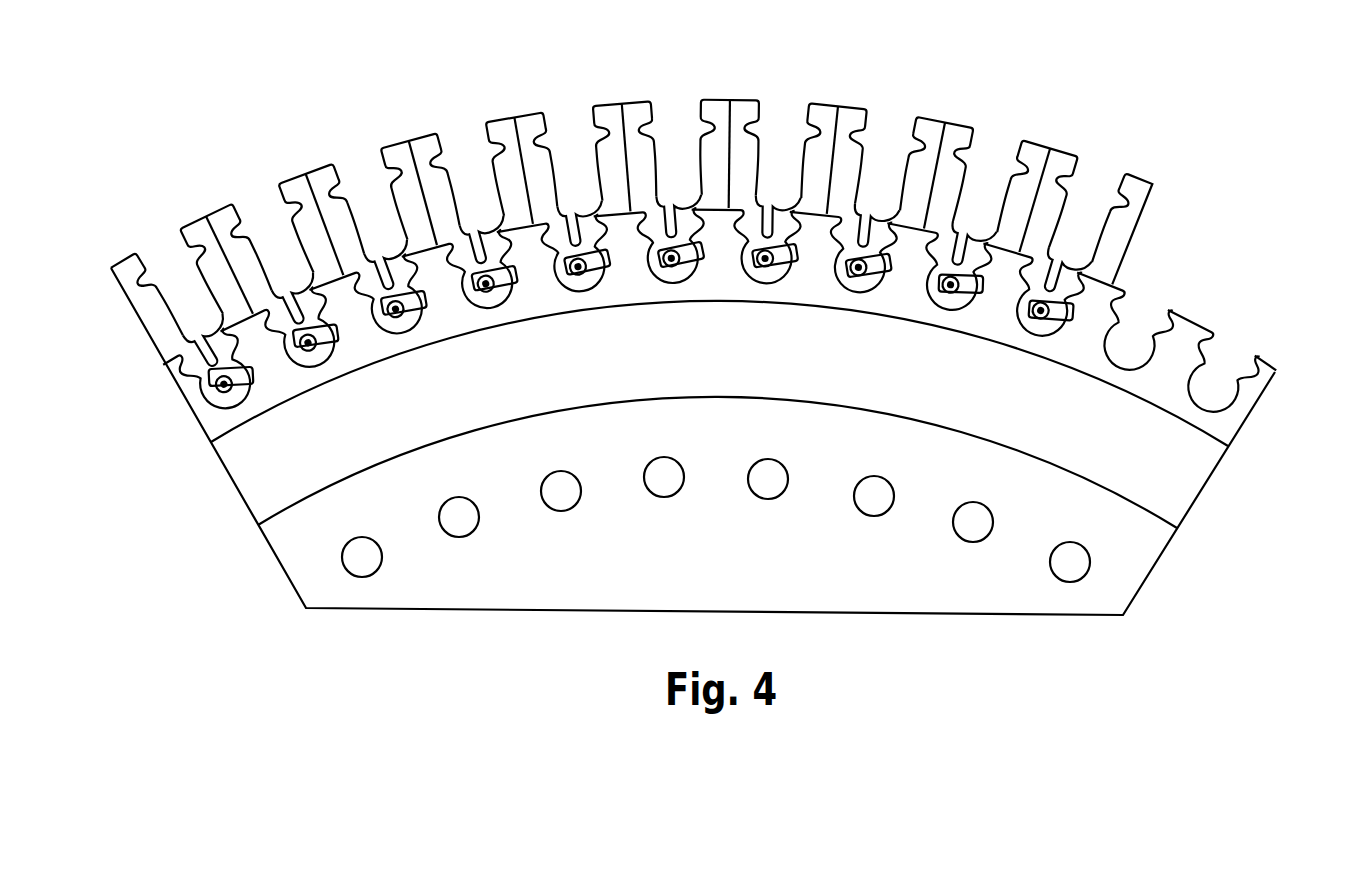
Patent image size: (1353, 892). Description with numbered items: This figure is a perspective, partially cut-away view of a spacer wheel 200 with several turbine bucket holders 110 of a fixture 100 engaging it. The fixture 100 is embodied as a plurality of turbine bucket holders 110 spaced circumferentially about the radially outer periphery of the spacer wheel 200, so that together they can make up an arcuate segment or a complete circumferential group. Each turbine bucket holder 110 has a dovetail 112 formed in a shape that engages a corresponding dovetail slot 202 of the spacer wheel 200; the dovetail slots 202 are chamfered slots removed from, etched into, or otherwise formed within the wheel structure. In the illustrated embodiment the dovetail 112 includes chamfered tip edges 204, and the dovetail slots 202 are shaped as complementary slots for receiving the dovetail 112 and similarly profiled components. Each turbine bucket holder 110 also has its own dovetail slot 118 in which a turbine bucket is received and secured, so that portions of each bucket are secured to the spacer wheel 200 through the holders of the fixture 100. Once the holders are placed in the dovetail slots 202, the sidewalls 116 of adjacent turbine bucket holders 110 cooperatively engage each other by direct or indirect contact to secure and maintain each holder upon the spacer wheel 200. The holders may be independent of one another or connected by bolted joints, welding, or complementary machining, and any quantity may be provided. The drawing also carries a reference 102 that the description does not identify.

The fixture 100 is at (276, 136).
The rotor disk 102 is at (1150, 183).
The turbine bucket holder 110 is at (828, 212).
The dovetail 112 is at (388, 287).
The sidewalls 116 is at (1135, 238).
The dovetail slot 118 is at (177, 267).
The spacer wheel 200 is at (568, 573).
The dovetail slot 202 is at (872, 250).
The chamfered tip edges 204 is at (197, 413).